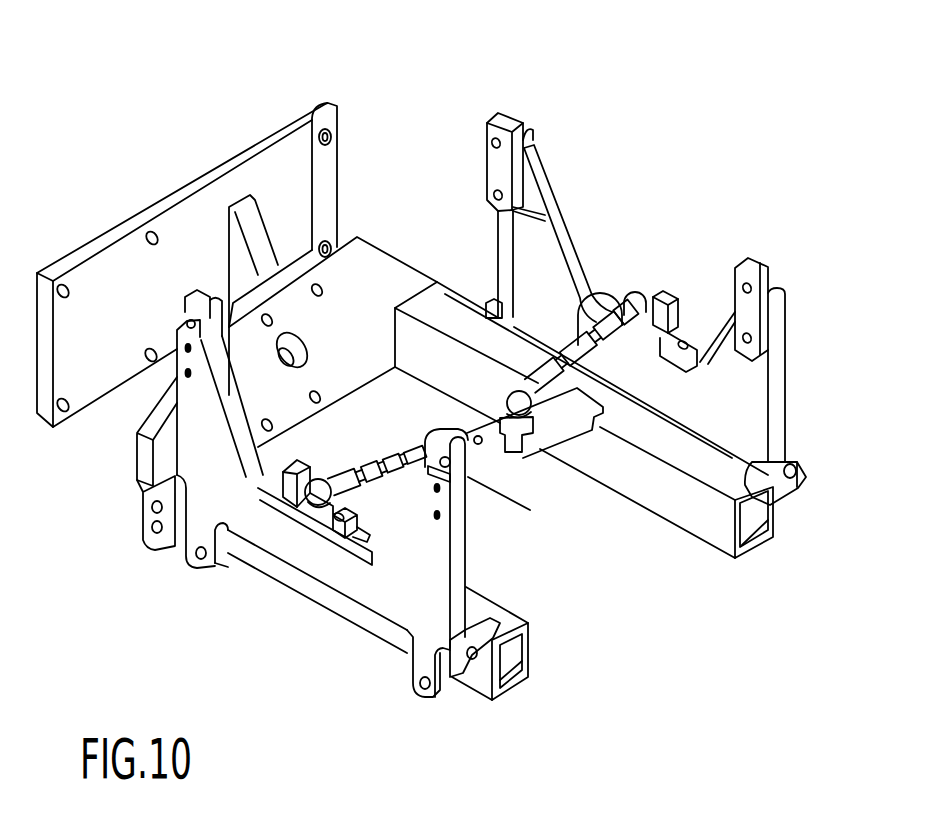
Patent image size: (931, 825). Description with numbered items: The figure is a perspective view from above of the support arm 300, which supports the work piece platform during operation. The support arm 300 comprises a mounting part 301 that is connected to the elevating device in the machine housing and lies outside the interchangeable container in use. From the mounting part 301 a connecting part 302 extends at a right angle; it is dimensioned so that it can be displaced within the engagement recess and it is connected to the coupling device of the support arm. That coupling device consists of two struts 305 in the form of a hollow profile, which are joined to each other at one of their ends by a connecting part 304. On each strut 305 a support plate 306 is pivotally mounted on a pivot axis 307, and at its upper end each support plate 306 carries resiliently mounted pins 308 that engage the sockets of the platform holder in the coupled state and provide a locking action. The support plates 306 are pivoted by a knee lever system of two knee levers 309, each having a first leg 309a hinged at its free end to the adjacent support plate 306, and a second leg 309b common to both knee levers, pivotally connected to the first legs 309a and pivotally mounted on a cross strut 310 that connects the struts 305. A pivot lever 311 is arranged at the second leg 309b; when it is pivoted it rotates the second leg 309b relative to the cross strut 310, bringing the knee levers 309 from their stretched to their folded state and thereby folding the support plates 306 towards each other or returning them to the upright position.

The support arm 300 is at (733, 160).
The mounting part 301 is at (117, 253).
The connecting part 302 is at (260, 224).
The connecting part 304 is at (395, 247).
The struts 305 is at (713, 528).
The support plate 306 is at (757, 403).
The pivot axis 307 is at (797, 462).
The pins 308 is at (197, 290).
The knee levers 309 is at (503, 393).
The first leg 309a is at (600, 314).
The second leg 309b is at (510, 457).
The cross strut 310 is at (570, 437).
The pivot lever 311 is at (493, 497).